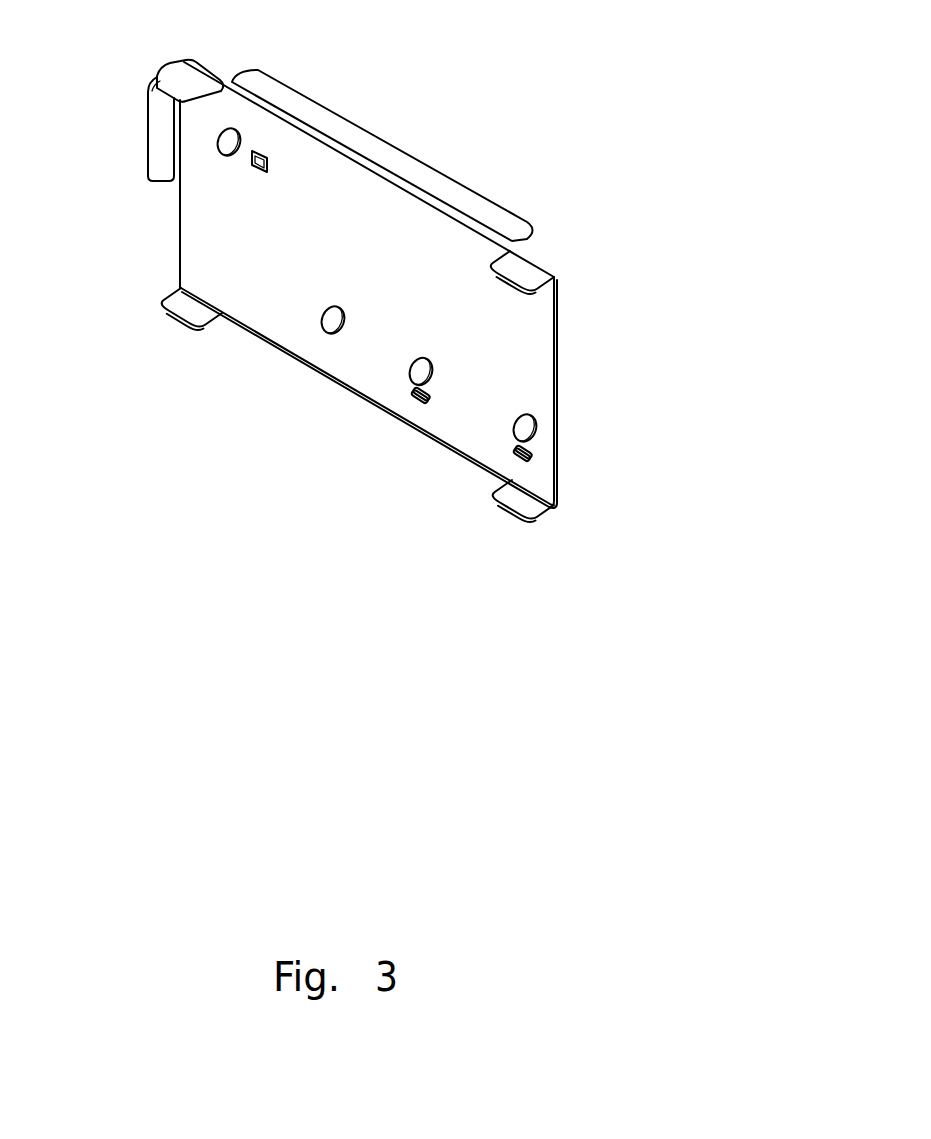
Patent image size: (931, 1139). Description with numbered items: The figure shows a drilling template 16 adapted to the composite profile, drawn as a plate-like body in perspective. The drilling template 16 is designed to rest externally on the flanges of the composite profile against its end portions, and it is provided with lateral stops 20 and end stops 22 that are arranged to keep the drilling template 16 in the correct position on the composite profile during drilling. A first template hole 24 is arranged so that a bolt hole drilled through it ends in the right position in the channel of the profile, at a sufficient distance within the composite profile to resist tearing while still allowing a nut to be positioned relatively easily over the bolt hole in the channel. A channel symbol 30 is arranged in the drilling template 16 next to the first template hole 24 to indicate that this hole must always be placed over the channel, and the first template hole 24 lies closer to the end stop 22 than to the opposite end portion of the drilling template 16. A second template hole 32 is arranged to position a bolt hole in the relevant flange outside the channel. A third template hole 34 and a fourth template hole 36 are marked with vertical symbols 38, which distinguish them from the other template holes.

The drilling template 16 is at (400, 118).
The lateral stops 20 is at (497, 222).
The end stops 22 is at (178, 225).
The first template hole 24 is at (222, 137).
The channel symbol 30 is at (252, 163).
The second template hole 32 is at (327, 332).
The third template hole 34 is at (413, 381).
The fourth template hole 36 is at (493, 503).
The vertical symbols 38 is at (515, 456).